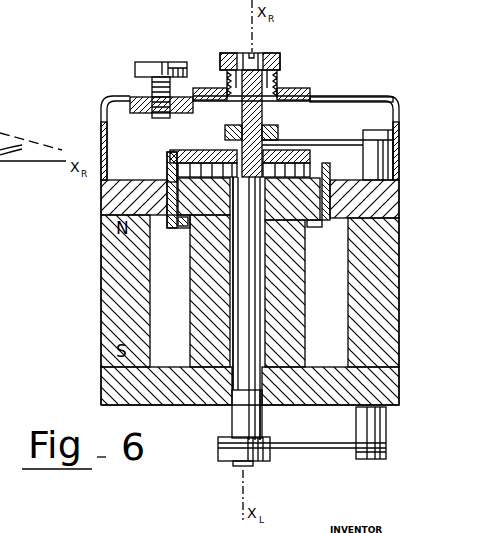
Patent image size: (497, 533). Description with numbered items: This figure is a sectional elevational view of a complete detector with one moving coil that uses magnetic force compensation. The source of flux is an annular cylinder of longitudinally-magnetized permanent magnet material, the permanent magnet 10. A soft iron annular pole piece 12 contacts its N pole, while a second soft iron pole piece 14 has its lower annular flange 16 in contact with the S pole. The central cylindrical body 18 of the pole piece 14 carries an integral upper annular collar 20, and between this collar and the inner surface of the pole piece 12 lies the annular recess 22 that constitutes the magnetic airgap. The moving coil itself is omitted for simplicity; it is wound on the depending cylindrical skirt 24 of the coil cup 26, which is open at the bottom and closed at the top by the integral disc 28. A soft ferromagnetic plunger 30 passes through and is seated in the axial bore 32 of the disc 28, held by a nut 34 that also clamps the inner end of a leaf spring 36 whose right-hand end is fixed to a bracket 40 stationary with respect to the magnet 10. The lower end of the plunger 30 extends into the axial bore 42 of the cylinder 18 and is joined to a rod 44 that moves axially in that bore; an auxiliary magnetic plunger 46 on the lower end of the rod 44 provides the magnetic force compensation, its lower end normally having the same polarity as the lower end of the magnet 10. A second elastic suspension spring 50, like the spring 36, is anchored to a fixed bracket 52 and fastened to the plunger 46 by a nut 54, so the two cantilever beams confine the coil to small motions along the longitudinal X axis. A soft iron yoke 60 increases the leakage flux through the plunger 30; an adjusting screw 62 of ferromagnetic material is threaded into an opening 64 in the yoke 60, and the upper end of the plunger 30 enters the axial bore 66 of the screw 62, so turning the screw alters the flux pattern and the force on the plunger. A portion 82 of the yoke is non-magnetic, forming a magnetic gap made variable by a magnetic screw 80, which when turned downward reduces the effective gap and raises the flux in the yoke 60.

The permanent magnet 10 is at (400, 262).
The pole piece 12 is at (394, 206).
The pole piece 14 is at (191, 344).
The lower annular flange 16 is at (133, 405).
The central cylindrical body 18 is at (304, 268).
The upper annular collar 20 is at (187, 230).
The annular recess 22 is at (160, 173).
The depending cylindrical skirt 24 is at (331, 178).
The coil cup 26 is at (161, 159).
The integral disc 28 is at (172, 138).
The plunger 30 is at (262, 120).
The axial bore 32 is at (208, 149).
The nut 34 is at (280, 135).
The leaf spring 36 is at (342, 140).
The bracket 40 is at (386, 157).
The axial bore 42 is at (233, 378).
The rod 44 is at (263, 375).
The auxiliary magnetic plunger 46 is at (264, 417).
The second elastic suspension spring 50 is at (295, 450).
The fixed bracket 52 is at (387, 424).
The nut 54 is at (217, 453).
The yoke 60 is at (366, 97).
The adjusting screw 62 is at (283, 68).
The opening 64 is at (276, 97).
The axial bore 66 is at (258, 78).
The screw 80 is at (134, 92).
The portion 82 is at (104, 104).